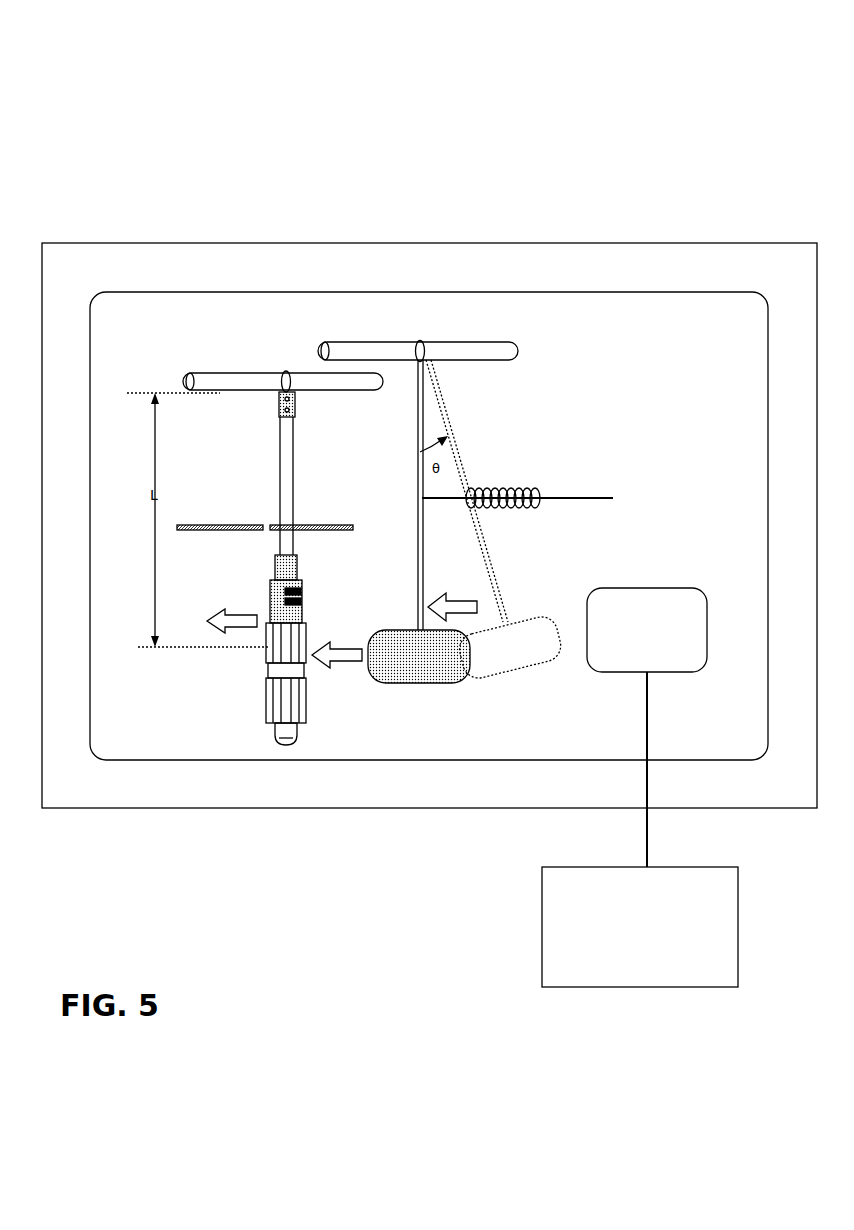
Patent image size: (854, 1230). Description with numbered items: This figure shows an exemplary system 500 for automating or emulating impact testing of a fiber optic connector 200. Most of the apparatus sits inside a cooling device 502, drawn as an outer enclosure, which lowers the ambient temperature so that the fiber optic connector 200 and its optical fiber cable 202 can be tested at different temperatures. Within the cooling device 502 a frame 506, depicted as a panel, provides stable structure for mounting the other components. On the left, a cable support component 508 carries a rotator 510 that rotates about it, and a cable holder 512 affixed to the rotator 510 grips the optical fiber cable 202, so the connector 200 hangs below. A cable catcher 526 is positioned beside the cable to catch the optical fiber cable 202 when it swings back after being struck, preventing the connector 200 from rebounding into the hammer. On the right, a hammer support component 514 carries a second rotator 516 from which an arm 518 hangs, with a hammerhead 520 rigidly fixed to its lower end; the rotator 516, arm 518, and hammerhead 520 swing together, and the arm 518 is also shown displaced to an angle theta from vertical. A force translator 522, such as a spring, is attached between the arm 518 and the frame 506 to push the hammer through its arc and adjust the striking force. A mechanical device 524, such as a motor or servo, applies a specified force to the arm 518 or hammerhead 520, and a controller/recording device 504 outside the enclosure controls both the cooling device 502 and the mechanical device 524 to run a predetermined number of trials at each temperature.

The system 500 is at (430, 94).
The cooling device 502 is at (592, 243).
The frame 506 is at (254, 292).
The cable support component 508 is at (237, 373).
The rotator 510 is at (285, 374).
The cable holder 512 is at (279, 405).
The optical fiber cable 202 is at (280, 484).
The fiber optic connector 200 is at (246, 674).
The cable catcher 526 is at (216, 530).
The hammer support component 514 is at (518, 352).
The rotator 516 is at (425, 355).
The arm 518 is at (425, 394).
The force translator 522 is at (540, 489).
The hammerhead 520 is at (455, 683).
The mechanical device 524 is at (647, 630).
The controller/recording device 504 is at (640, 927).